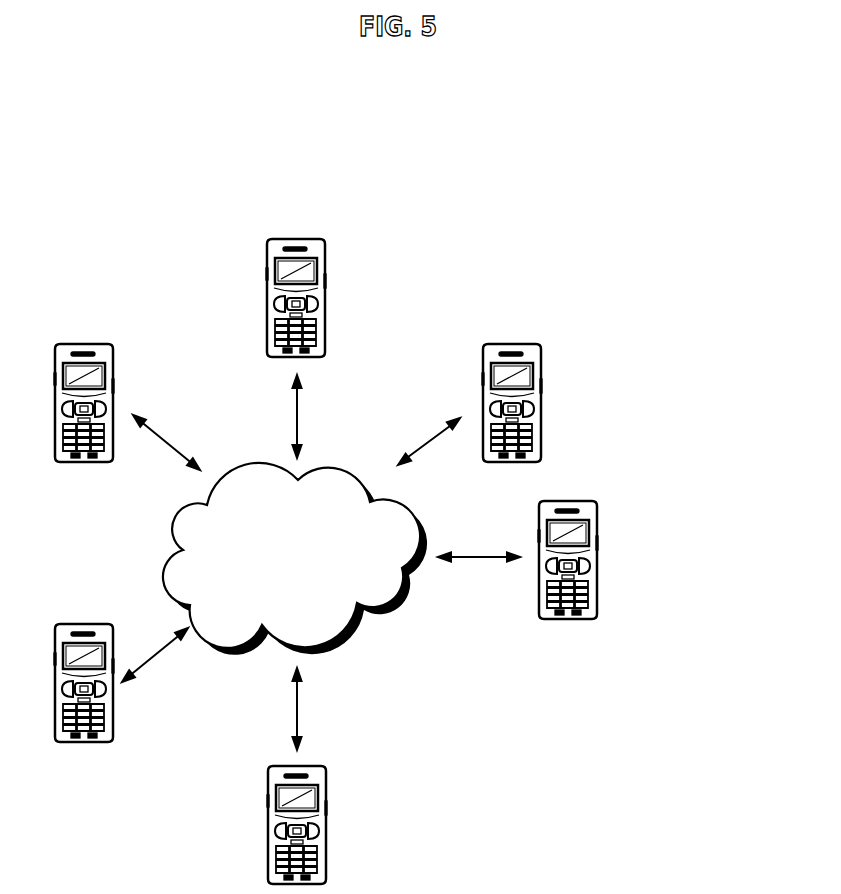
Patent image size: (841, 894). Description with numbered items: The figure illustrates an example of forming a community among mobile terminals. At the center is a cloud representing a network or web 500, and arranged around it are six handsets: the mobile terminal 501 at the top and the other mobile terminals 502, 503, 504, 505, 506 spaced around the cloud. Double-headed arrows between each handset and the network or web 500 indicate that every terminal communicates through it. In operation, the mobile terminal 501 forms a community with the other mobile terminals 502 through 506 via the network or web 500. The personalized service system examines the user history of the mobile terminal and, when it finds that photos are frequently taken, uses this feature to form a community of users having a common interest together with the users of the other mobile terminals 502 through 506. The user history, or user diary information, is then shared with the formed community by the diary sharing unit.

The network or web 500 is at (340, 470).
The mobile terminal 501 is at (293, 238).
The mobile terminal 502 is at (511, 342).
The mobile terminal 503 is at (598, 555).
The mobile terminal 504 is at (327, 822).
The mobile terminal 505 is at (80, 622).
The mobile terminal 506 is at (80, 342).